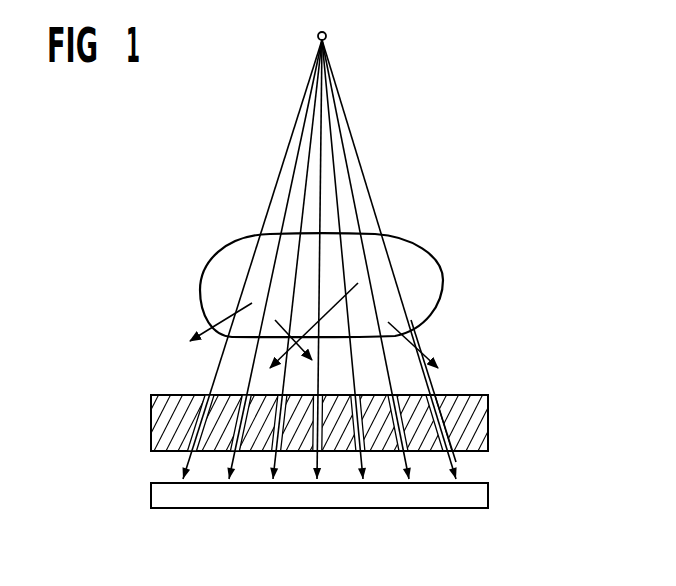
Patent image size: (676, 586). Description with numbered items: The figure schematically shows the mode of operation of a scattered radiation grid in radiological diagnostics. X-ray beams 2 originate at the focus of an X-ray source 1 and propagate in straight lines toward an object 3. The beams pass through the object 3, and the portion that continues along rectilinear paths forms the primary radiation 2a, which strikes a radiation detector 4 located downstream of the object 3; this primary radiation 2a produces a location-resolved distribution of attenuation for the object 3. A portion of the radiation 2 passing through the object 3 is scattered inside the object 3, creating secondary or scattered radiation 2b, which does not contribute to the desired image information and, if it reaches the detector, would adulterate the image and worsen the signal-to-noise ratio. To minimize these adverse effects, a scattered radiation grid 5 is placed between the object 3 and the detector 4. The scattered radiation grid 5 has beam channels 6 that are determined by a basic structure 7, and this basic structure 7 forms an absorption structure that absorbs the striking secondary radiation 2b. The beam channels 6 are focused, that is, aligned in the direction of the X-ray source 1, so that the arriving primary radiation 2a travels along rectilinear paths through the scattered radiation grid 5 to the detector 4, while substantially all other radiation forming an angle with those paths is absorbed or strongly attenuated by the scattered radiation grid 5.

The X-ray source 1 is at (327, 37).
The X-ray beams 2 is at (348, 155).
The primary radiation 2a is at (428, 385).
The scattered radiation 2b is at (398, 326).
The object 3 is at (435, 292).
The radiation detector 4 is at (482, 498).
The scattered radiation grid 5 is at (484, 426).
The beam channels 6 is at (207, 394).
The basic structure 7 is at (220, 394).